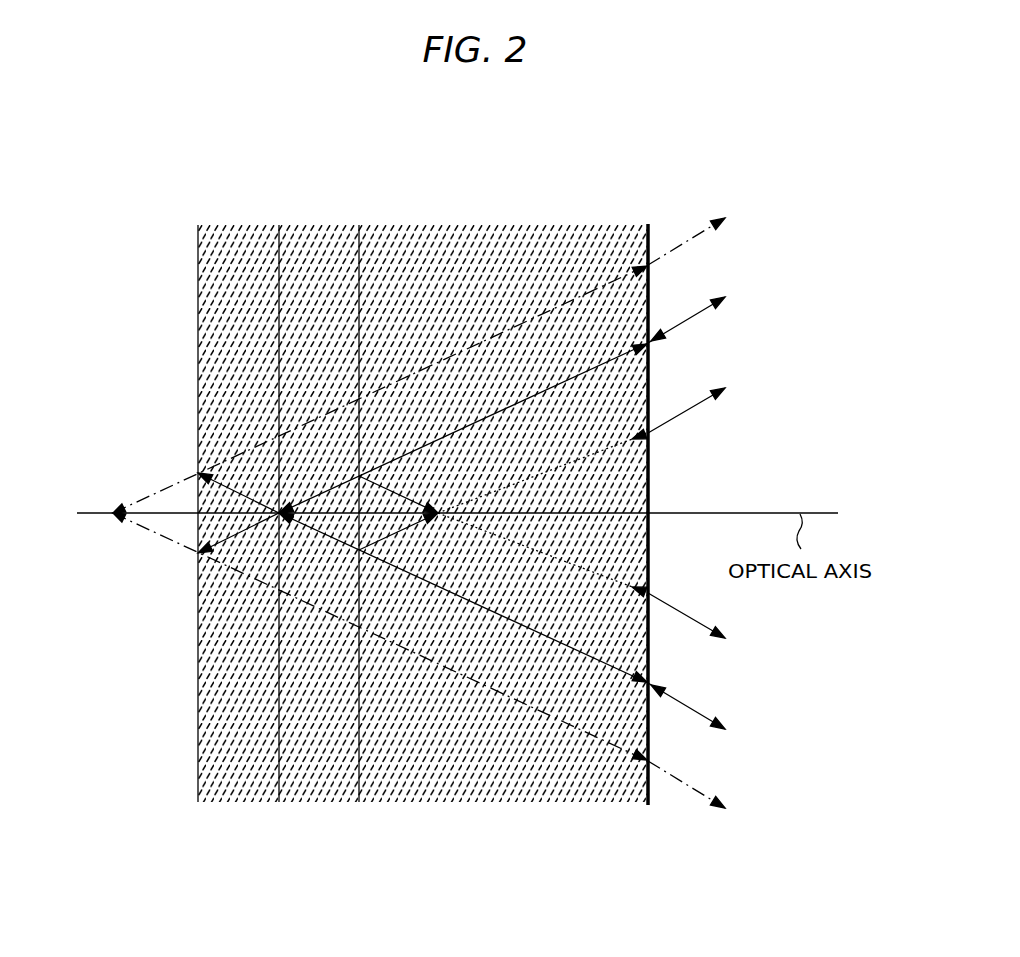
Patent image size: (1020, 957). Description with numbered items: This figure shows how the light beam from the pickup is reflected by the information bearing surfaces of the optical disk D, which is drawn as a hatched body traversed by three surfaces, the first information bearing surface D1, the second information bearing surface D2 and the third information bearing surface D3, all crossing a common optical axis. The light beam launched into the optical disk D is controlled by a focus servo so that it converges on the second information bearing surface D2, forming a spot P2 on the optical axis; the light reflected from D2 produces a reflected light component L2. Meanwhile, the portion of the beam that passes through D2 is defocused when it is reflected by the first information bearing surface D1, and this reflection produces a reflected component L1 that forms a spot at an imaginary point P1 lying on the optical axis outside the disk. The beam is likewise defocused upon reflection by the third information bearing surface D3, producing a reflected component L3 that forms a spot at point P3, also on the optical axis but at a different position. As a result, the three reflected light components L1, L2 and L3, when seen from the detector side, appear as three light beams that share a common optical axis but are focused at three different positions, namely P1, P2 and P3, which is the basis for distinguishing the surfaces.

The optical disk D is at (580, 225).
The first information bearing surface D1 is at (198, 803).
The second information bearing surface D2 is at (279, 803).
The third information bearing surface D3 is at (359, 803).
The imaginary point P1 is at (113, 513).
The spot P2 is at (279, 513).
The point P3 is at (438, 513).
The reflected light component L1 is at (686, 243).
The reflected light component L2 is at (686, 322).
The reflected light component L3 is at (686, 412).